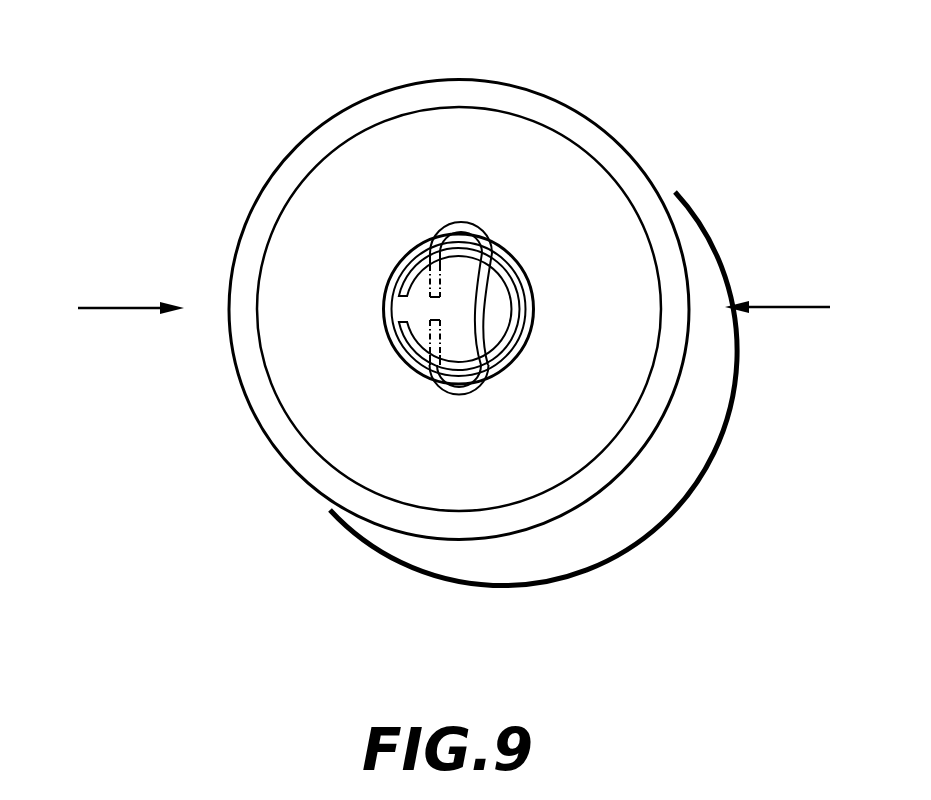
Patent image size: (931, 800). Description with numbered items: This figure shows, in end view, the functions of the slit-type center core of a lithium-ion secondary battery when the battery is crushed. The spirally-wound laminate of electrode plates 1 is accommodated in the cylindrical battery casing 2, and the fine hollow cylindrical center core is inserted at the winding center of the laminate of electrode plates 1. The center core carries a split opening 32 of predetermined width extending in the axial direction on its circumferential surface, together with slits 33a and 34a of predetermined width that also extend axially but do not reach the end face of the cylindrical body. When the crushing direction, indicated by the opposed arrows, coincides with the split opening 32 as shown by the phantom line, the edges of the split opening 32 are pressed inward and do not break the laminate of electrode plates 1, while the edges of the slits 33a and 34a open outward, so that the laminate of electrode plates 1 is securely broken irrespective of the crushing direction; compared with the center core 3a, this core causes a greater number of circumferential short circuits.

The laminate of electrode plates 1 is at (580, 185).
The battery casing 2 is at (645, 188).
The center core 3a is at (513, 320).
The split opening 32 is at (390, 306).
The slit 33a is at (470, 227).
The slit 34a is at (482, 397).